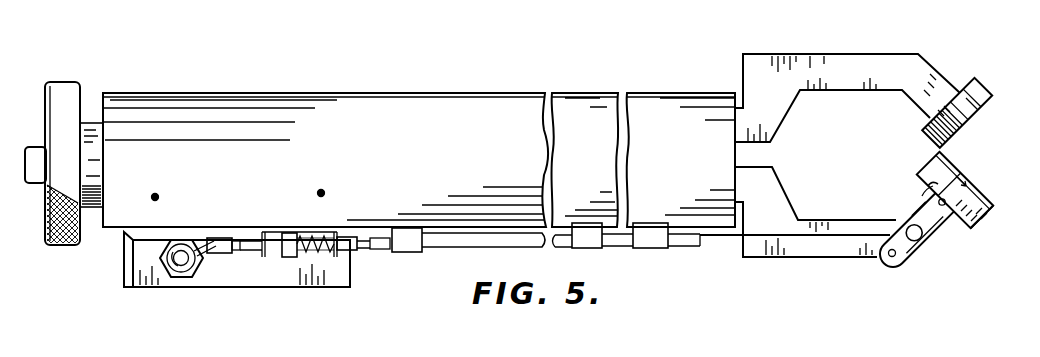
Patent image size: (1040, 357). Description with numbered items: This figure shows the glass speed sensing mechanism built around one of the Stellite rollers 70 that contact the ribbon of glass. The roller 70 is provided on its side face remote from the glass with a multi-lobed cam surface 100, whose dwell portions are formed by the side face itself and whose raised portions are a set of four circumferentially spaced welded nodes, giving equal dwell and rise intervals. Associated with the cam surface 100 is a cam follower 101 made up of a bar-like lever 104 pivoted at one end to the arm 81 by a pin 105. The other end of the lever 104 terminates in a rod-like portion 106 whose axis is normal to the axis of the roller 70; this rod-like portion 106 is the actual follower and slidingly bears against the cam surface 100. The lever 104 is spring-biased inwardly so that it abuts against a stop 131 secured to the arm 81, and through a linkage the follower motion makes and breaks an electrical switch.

The roller 70 is at (984, 216).
The arm 81 is at (851, 219).
The cam surface 100 is at (961, 225).
The cam follower 101 is at (939, 200).
The lever 104 is at (903, 248).
The pin 105 is at (888, 257).
The rod-like portion 106 is at (936, 192).
The stop 131 is at (921, 212).